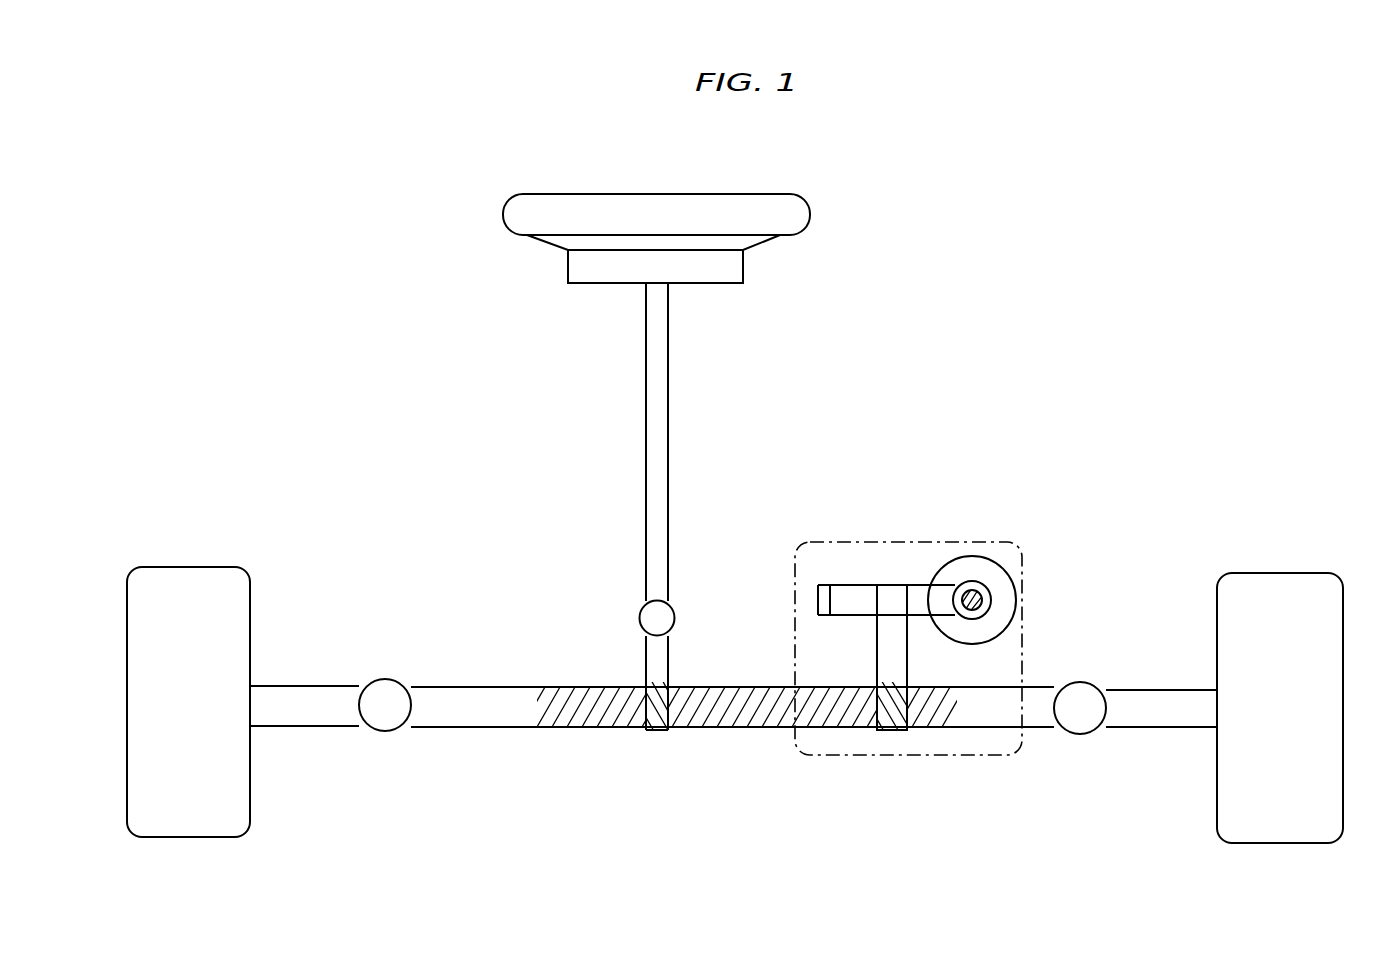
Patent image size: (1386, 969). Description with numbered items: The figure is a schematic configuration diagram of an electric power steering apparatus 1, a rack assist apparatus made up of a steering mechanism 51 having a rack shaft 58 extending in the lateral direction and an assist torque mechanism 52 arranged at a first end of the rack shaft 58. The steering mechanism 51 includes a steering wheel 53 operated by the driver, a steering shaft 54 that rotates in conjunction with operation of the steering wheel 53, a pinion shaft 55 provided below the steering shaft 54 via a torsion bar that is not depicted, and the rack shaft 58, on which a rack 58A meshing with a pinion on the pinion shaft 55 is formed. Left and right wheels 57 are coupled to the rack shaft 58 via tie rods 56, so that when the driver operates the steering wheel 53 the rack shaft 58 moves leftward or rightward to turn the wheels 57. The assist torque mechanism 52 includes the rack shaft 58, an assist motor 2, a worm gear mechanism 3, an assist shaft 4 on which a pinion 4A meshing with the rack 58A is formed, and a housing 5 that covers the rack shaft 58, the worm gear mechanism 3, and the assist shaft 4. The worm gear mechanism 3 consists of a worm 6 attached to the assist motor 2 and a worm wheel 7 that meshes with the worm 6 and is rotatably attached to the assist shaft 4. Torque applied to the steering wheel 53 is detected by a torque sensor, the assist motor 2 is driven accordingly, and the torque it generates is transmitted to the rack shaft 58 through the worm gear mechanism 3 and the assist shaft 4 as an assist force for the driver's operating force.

The electric power steering apparatus 1 is at (888, 382).
The assist motor 2 is at (1012, 570).
The worm gear mechanism 3 is at (983, 514).
The assist shaft 4 is at (877, 648).
The pinion 4A is at (884, 730).
The housing 5 is at (793, 585).
The worm 6 is at (972, 581).
The worm wheel 7 is at (915, 585).
The steering mechanism 51 is at (512, 420).
The assist torque mechanism 52 is at (788, 543).
The steering wheel 53 is at (810, 200).
The steering shaft 54 is at (668, 420).
The pinion shaft 55 is at (646, 648).
The tie rods 56 is at (306, 686).
The wheels 57 is at (205, 567).
The rack shaft 58 is at (583, 727).
The rack 58A is at (710, 727).